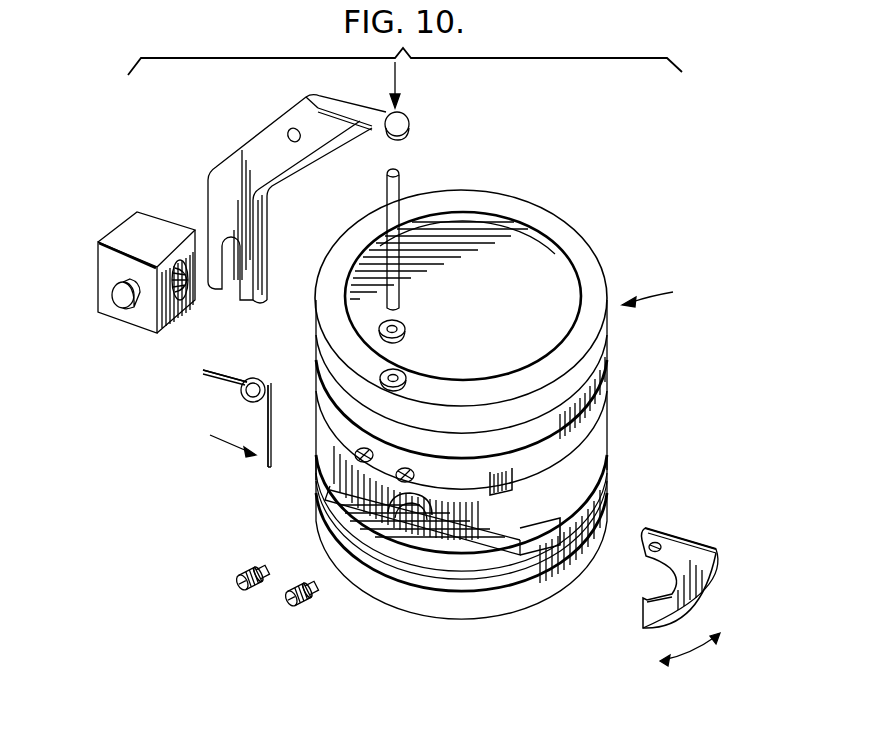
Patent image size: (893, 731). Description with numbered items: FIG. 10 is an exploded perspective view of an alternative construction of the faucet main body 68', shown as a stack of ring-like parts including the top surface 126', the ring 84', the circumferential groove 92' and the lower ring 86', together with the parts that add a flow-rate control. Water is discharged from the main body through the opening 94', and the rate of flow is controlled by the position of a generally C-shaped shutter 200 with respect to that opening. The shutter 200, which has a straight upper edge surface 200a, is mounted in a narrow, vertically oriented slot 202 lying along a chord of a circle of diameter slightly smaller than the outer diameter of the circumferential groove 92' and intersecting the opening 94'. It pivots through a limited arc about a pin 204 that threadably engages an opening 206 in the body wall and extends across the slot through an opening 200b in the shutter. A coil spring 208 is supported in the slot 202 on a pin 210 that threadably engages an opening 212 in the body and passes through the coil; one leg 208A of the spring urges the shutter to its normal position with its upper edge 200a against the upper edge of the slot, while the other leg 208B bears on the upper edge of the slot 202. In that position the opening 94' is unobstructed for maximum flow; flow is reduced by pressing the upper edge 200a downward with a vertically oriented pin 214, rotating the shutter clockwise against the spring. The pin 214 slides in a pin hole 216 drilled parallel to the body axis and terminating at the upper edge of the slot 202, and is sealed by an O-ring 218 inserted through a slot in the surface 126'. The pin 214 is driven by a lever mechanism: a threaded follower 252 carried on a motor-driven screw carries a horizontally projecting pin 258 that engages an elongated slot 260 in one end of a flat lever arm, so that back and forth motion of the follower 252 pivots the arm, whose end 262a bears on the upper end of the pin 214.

The threaded follower 252 is at (137, 224).
The pin 258 is at (112, 296).
The elongated slot 260 is at (228, 287).
The ball end of lever 262a is at (404, 121).
The vertically oriented pin 214 is at (402, 172).
The surface 126' is at (474, 311).
The O-ring 218 is at (406, 330).
The pin hole 216 is at (408, 375).
The actuator assembly 68' is at (665, 287).
The ring 84' is at (505, 396).
The circumferential groove 92' is at (502, 457).
The opening 212 is at (368, 447).
The opening 206 is at (408, 467).
The slot 202 is at (497, 568).
The opening 94' is at (380, 568).
The bottom ring 86' is at (461, 558).
The shutter 200 is at (700, 598).
The upper edge surface 200a is at (700, 545).
The opening 200b is at (652, 552).
The coil spring 208 is at (243, 394).
The leg of coil spring 208A is at (268, 470).
The leg of coil spring 208B is at (210, 379).
The pin 210 is at (242, 587).
The pin 204 is at (288, 608).